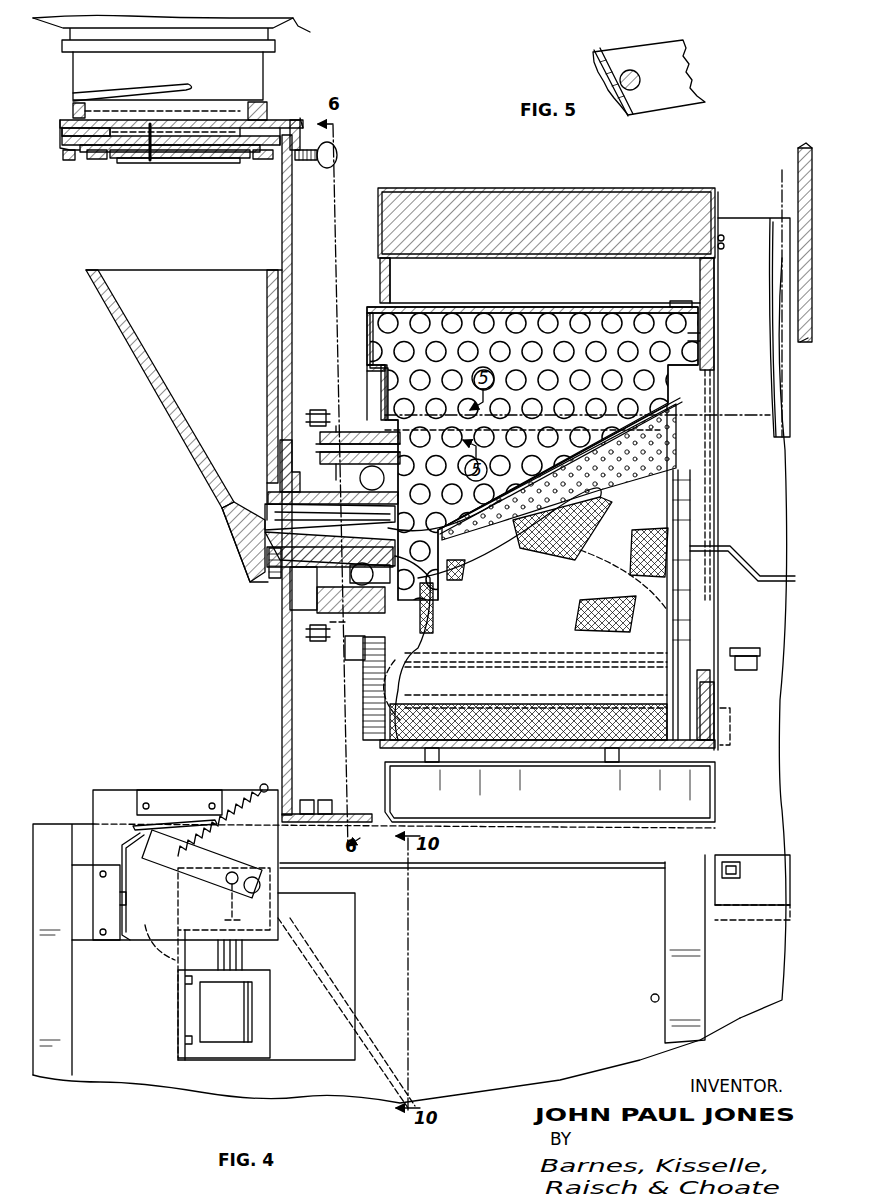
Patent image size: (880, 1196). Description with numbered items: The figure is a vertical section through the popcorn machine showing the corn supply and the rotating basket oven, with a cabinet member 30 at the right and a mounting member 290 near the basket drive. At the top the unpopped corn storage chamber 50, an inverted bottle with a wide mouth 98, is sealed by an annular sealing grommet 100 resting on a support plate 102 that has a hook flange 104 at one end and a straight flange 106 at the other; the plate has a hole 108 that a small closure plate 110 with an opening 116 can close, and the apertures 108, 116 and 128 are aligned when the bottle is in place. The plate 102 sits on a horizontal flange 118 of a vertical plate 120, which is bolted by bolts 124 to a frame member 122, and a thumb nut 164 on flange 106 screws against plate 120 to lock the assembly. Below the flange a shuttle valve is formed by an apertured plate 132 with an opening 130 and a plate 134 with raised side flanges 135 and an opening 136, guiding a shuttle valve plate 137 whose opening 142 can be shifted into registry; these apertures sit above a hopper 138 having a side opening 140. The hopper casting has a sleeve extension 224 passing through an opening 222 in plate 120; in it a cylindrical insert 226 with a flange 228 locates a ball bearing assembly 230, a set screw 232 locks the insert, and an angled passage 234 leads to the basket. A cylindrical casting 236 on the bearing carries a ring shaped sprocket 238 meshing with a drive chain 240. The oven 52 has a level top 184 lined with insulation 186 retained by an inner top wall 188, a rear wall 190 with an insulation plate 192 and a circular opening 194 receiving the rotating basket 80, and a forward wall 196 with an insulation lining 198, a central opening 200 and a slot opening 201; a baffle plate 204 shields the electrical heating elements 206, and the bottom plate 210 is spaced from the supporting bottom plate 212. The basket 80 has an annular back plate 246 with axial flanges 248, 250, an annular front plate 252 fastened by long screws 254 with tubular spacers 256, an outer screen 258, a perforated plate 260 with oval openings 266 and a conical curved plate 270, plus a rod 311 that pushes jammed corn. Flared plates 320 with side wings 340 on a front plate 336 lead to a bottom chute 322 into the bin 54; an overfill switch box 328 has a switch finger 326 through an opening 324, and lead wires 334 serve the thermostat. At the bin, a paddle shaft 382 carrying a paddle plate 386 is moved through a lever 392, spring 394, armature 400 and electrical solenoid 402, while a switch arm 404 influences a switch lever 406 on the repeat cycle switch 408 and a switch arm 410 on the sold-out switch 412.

In FIG. 4, the unpopped corn storage chamber 50 is at (183, 33).
In FIG. 4, the wide mouth 98 is at (92, 74).
In FIG. 4, the hole 108 is at (160, 96).
In FIG. 4, the aperture 128 is at (204, 108).
In FIG. 4, the annular sealing grommet 100 is at (252, 108).
In FIG. 4, the horizontal flange 118 is at (296, 122).
In FIG. 4, the support plate 102 is at (304, 116).
In FIG. 4, the closure plate 110 is at (76, 110).
In FIG. 4, the hook flange 104 is at (60, 126).
In FIG. 4, the straight flange 106 is at (334, 128).
In FIG. 4, the thumb nut 164 is at (337, 153).
In FIG. 4, the apertured plate 132 is at (70, 155).
In FIG. 4, the raised side flanges 135 is at (92, 160).
In FIG. 4, the plate 134 is at (125, 163).
In FIG. 4, the shuttle valve plate 137 is at (140, 163).
In FIG. 4, the opening 130 is at (178, 155).
In FIG. 4, the opening 136 is at (175, 161).
In FIG. 4, the opening 116 is at (152, 155).
In FIG. 4, the opening 142 is at (165, 162).
In FIG. 4, the vertical plate 120 is at (293, 212).
In FIG. 4, the heating oven 52 is at (445, 190).
In FIG. 4, the level top 184 is at (580, 190).
In FIG. 4, the insulation 186 is at (672, 205).
In FIG. 4, the frame member 30 is at (801, 150).
In FIG. 4, the side wings 340 is at (774, 294).
In FIG. 4, the flared plates 320 is at (770, 218).
In FIG. 4, the front plate 336 is at (766, 226).
In FIG. 4, the overfill switch box 328 is at (724, 240).
In FIG. 4, the forward wall 196 is at (716, 282).
In FIG. 4, the insulation lining 198 is at (740, 302).
In FIG. 4, the central opening 200 is at (714, 374).
In FIG. 4, the long screws 254 is at (716, 420).
In FIG. 5, the long screws 254 is at (602, 84).
In FIG. 4, the rear wall 190 is at (380, 276).
In FIG. 4, the insulation plate 192 is at (392, 274).
In FIG. 4, the circular opening 194 is at (381, 298).
In FIG. 4, the axial flange 250 is at (372, 313).
In FIG. 4, the annular back plate 246 is at (368, 322).
In FIG. 4, the axial flange 248 is at (367, 376).
In FIG. 4, the rotating basket 80 is at (522, 304).
In FIG. 4, the screen 258 is at (460, 308).
In FIG. 5, the screen 258 is at (700, 64).
In FIG. 4, the perforated plate 260 is at (565, 325).
In FIG. 5, the perforated plate 260 is at (598, 52).
In FIG. 4, the inner top wall 188 is at (600, 256).
In FIG. 4, the annular front plate 252 is at (680, 300).
In FIG. 4, the openings 266 is at (702, 338).
In FIG. 4, the tubular spacers 256 is at (620, 468).
In FIG. 5, the tubular spacers 256 is at (638, 87).
In FIG. 4, the curved plate 270 is at (612, 526).
In FIG. 4, the electrical heating elements 206 is at (505, 652).
In FIG. 4, the flange 228 is at (430, 565).
In FIG. 4, the drive chain 240 is at (308, 418).
In FIG. 4, the ball bearing assembly 230 is at (372, 440).
In FIG. 4, the sleeve extension 224 is at (285, 470).
In FIG. 4, the angled passage 234 is at (278, 500).
In FIG. 4, the side opening 140 is at (240, 516).
In FIG. 4, the cylindrical insert 226 is at (362, 512).
In FIG. 4, the hopper 138 is at (120, 332).
In FIG. 4, the set screw 232 is at (268, 578).
In FIG. 4, the opening 222 is at (298, 598).
In FIG. 4, the ring shaped sprocket 238 is at (308, 605).
In FIG. 4, the cylindrical casting 236 is at (345, 648).
In FIG. 4, the ribbed plate 290 is at (362, 672).
In FIG. 4, the rod 311 is at (742, 562).
In FIG. 4, the opening 324 is at (745, 646).
In FIG. 4, the switch finger 326 is at (746, 670).
In FIG. 4, the lead wires 334 is at (731, 722).
In FIG. 4, the slot opening 201 is at (712, 760).
In FIG. 4, the baffle plate 204 is at (598, 750).
In FIG. 4, the bottom plate 210 is at (540, 762).
In FIG. 4, the supporting bottom plate 212 is at (545, 820).
In FIG. 4, the bolts 124 is at (320, 800).
In FIG. 4, the frame member 122 is at (82, 828).
In FIG. 4, the switch arm 410 is at (135, 824).
In FIG. 4, the sold-out switch 412 is at (185, 790).
In FIG. 4, the spring 394 is at (252, 794).
In FIG. 4, the switch lever 406 is at (135, 862).
In FIG. 4, the lever 392 is at (278, 870).
In FIG. 4, the repeat cycle switch 408 is at (100, 895).
In FIG. 4, the switch arm 404 is at (175, 880).
In FIG. 4, the paddle shaft 382 is at (262, 888).
In FIG. 4, the armature 400 is at (244, 956).
In FIG. 4, the electrical solenoid 402 is at (255, 1015).
In FIG. 4, the bin 54 is at (668, 934).
In FIG. 4, the paddle plate 386 is at (380, 1046).
In FIG. 4, the bottom chute 322 is at (790, 862).